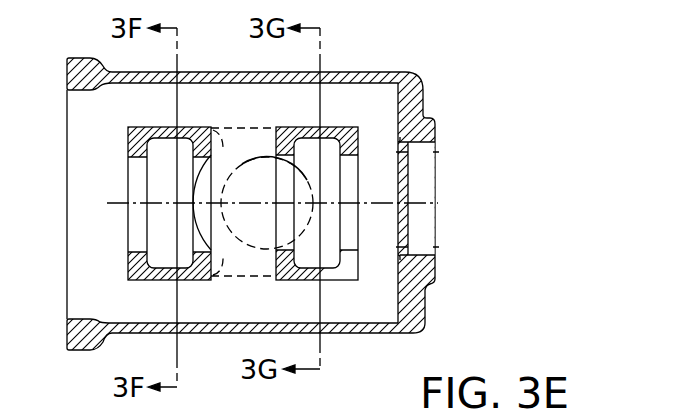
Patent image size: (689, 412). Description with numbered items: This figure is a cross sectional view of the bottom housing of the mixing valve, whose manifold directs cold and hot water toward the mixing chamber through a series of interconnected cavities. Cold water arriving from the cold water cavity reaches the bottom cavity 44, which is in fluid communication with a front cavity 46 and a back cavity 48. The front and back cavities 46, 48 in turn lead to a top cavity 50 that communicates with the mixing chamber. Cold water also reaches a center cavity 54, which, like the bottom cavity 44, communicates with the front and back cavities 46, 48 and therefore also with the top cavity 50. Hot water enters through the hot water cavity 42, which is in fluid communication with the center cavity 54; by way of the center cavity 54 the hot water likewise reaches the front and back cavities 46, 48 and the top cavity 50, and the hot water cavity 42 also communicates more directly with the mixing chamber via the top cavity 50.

The bottom cavity 44 is at (383, 293).
The top cavity 50 is at (83, 158).
The hot water cavity 42 is at (157, 235).
The center cavity 54 is at (213, 223).
The front cavity 46 is at (210, 100).
The back cavity 48 is at (217, 305).